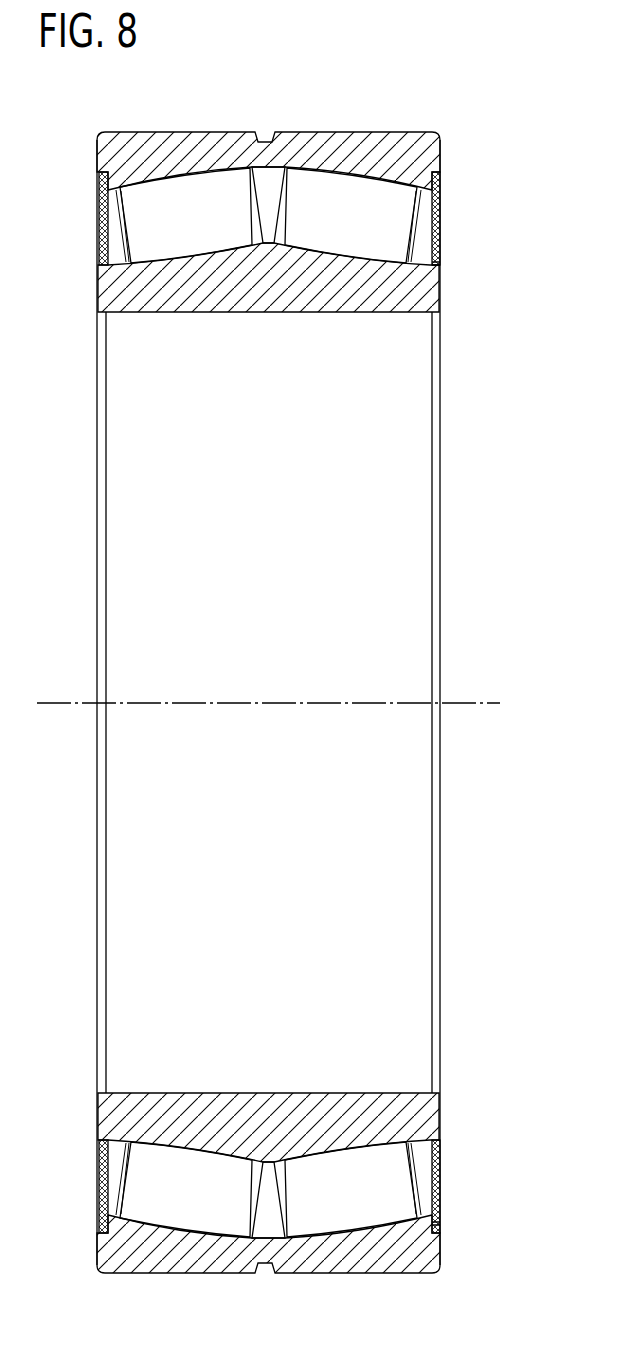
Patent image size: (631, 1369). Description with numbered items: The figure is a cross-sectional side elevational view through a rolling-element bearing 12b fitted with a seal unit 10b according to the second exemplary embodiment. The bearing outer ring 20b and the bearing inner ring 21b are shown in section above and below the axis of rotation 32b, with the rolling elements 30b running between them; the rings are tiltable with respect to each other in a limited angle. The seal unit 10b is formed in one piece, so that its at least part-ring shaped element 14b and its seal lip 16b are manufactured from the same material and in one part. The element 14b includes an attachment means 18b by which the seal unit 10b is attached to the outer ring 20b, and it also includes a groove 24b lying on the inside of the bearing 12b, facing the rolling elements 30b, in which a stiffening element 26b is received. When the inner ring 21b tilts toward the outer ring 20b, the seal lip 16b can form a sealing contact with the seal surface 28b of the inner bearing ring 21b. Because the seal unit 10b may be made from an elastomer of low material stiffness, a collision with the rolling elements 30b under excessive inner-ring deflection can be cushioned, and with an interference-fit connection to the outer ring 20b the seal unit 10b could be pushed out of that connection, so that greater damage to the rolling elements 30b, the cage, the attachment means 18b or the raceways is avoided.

The seal unit 10b is at (93, 170).
The rolling-element bearing 12b is at (503, 151).
The at least part-ring shaped element 14b is at (440, 222).
The seal lip 16b is at (440, 265).
The attachment means 18b is at (437, 1247).
The bearing outer ring 20b is at (344, 148).
The bearing inner ring 21b is at (270, 302).
The groove 24b is at (437, 1212).
The stiffening element 26b is at (437, 1222).
The seal surface 28b is at (410, 252).
The rolling elements 30b is at (315, 1166).
The axis of rotation 32b is at (482, 700).